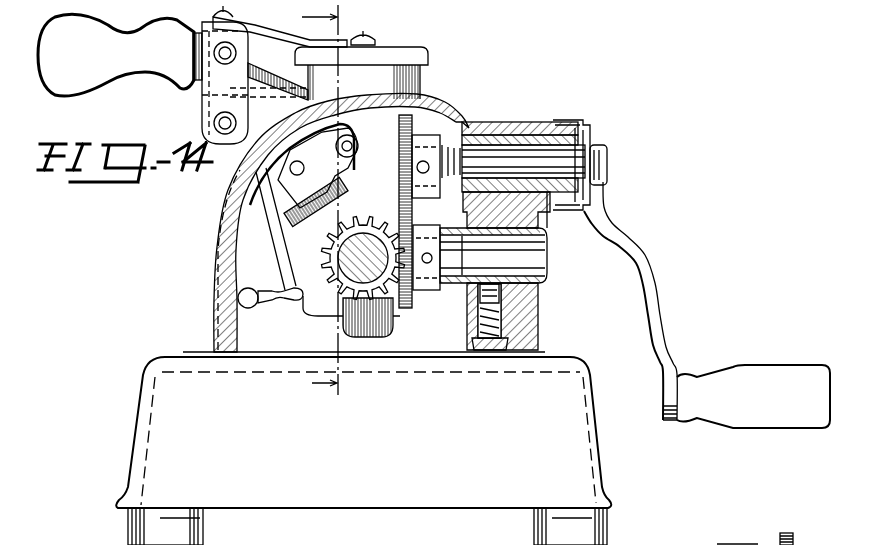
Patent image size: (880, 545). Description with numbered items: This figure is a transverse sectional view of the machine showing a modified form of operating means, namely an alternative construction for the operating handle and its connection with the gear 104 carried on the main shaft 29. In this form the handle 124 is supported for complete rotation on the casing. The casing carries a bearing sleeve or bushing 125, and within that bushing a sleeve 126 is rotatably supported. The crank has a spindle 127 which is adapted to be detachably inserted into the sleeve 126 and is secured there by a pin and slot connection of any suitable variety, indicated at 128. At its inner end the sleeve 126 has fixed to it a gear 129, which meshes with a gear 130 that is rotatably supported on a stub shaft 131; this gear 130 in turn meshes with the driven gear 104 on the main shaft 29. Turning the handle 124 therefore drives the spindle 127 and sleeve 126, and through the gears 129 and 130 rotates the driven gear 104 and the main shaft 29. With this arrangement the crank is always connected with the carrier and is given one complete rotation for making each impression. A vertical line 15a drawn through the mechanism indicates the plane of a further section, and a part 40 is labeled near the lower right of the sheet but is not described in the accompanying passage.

The section line 15a is at (313, 199).
The main shaft 29 is at (342, 250).
The base frame 40 is at (658, 544).
The driven gear 104 is at (345, 290).
The handle 124 is at (645, 290).
The bearing sleeve or bushing 125 is at (508, 146).
The sleeve 126 is at (484, 132).
The spindle 127 is at (560, 162).
The pin and slot connection 128 is at (552, 128).
The gear 129 is at (415, 116).
The gear 130 is at (410, 310).
The stub shaft 131 is at (520, 262).